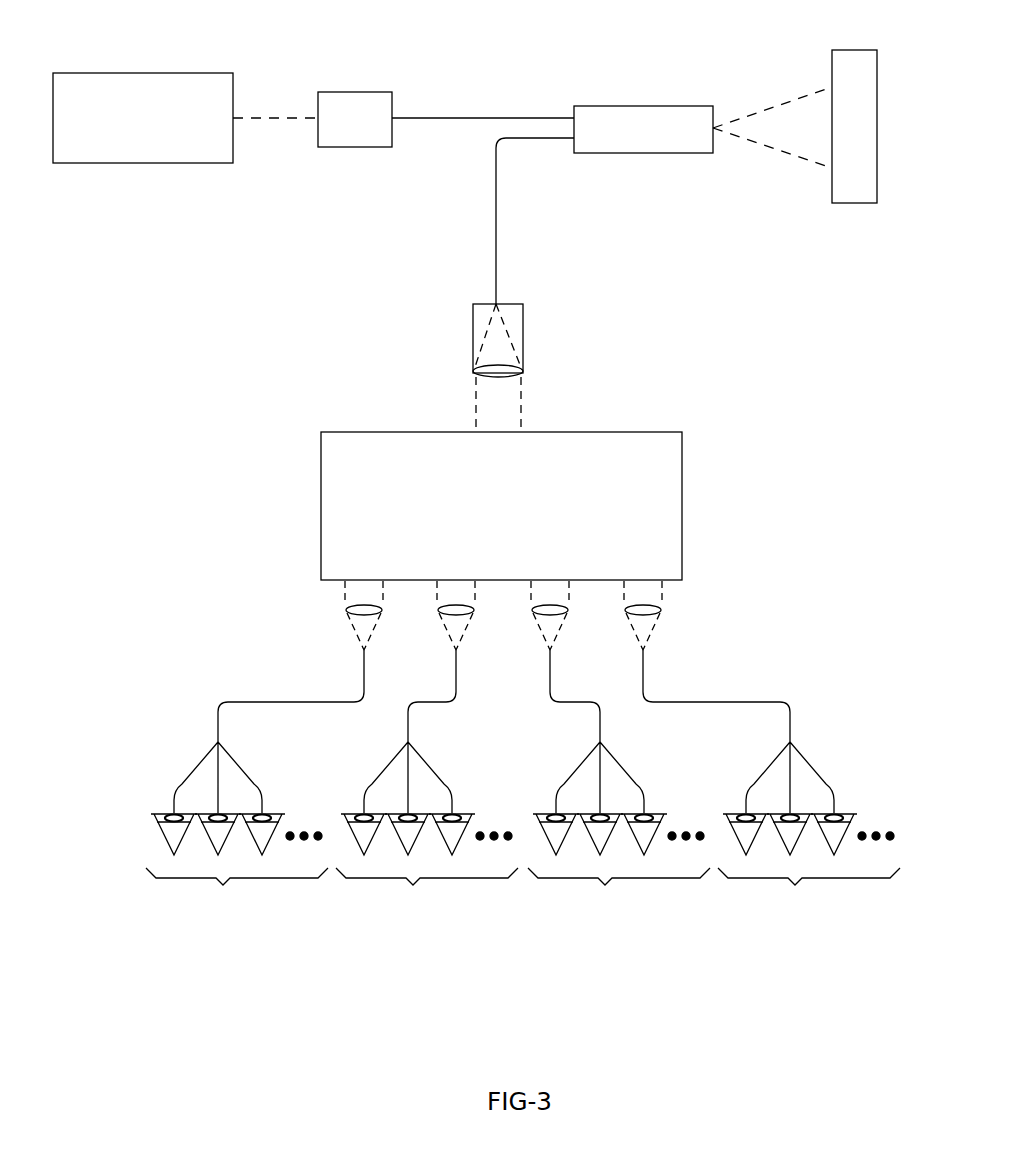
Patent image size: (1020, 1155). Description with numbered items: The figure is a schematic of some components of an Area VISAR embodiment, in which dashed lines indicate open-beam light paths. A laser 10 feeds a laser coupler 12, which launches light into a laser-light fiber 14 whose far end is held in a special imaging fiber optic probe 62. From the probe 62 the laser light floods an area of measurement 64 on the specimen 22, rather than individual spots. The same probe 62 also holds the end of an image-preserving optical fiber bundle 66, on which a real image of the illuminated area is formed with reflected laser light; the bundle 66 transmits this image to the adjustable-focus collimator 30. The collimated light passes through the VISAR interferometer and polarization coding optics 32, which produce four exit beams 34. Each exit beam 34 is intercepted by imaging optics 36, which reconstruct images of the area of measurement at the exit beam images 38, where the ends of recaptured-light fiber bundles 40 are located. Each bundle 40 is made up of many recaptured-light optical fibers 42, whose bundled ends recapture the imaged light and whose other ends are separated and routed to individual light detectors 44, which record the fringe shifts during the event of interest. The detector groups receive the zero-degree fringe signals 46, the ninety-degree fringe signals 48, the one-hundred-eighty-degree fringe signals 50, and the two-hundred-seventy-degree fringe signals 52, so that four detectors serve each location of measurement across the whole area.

The laser 10 is at (153, 72).
The laser coupler 12 is at (366, 91).
The laser-light fiber 14 is at (488, 116).
The specimen 22 is at (862, 203).
The adjustable-focus collimator 30 is at (474, 337).
The VISAR interferometer and polarization coding optics 32 is at (321, 502).
The exit beams 34 is at (345, 593).
The imaging optics 36 is at (660, 609).
The exit beam images 38 is at (365, 652).
The recaptured-light fiber bundles 40 is at (772, 700).
The recaptured-light optical fibers 42 is at (184, 773).
The light detectors 44 is at (162, 838).
The 0° fringe signals 46 is at (223, 885).
The 90° fringe signals 48 is at (413, 885).
The 180° fringe signals 50 is at (605, 885).
The 270° fringe signals 52 is at (795, 885).
The imaging fiber optic probe 62 is at (641, 106).
The area of measurement 64 is at (830, 137).
The image-preserving optical fiber bundle 66 is at (496, 222).